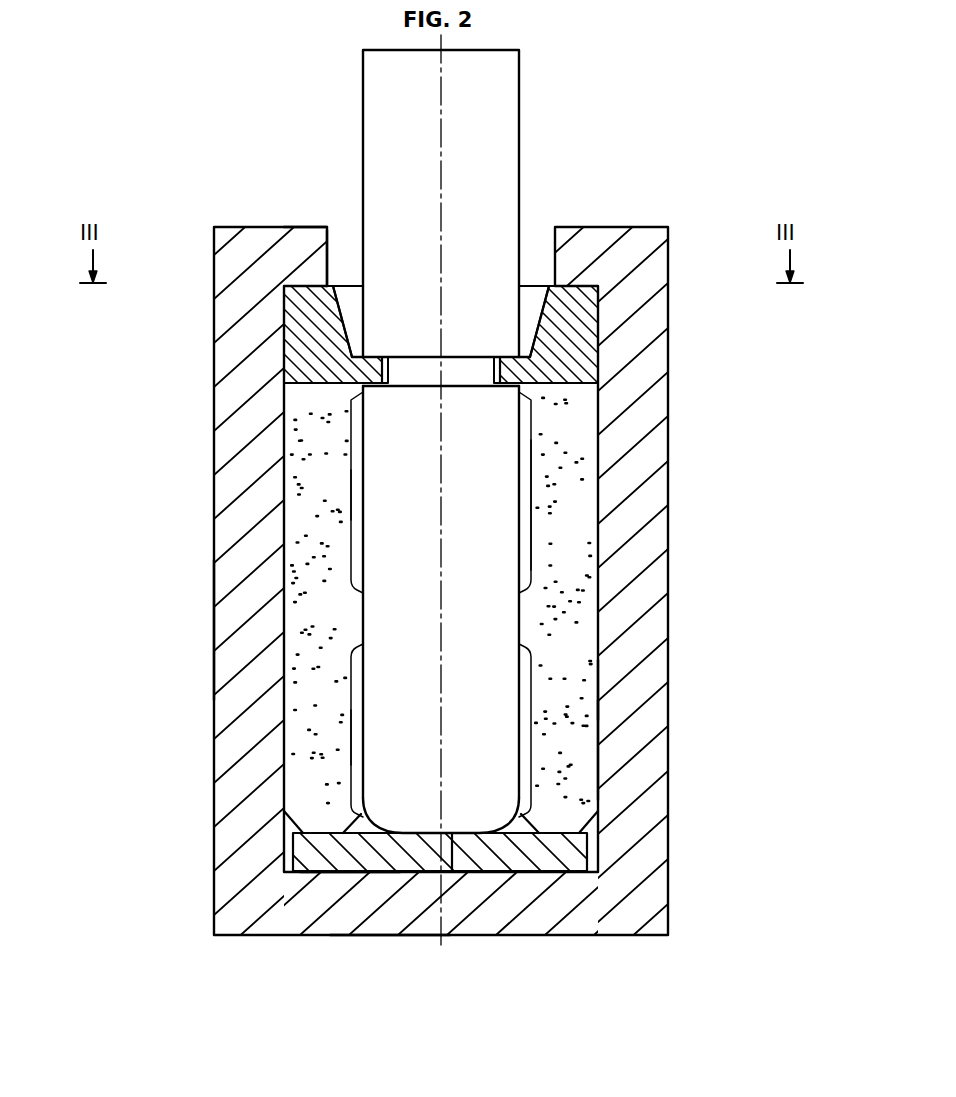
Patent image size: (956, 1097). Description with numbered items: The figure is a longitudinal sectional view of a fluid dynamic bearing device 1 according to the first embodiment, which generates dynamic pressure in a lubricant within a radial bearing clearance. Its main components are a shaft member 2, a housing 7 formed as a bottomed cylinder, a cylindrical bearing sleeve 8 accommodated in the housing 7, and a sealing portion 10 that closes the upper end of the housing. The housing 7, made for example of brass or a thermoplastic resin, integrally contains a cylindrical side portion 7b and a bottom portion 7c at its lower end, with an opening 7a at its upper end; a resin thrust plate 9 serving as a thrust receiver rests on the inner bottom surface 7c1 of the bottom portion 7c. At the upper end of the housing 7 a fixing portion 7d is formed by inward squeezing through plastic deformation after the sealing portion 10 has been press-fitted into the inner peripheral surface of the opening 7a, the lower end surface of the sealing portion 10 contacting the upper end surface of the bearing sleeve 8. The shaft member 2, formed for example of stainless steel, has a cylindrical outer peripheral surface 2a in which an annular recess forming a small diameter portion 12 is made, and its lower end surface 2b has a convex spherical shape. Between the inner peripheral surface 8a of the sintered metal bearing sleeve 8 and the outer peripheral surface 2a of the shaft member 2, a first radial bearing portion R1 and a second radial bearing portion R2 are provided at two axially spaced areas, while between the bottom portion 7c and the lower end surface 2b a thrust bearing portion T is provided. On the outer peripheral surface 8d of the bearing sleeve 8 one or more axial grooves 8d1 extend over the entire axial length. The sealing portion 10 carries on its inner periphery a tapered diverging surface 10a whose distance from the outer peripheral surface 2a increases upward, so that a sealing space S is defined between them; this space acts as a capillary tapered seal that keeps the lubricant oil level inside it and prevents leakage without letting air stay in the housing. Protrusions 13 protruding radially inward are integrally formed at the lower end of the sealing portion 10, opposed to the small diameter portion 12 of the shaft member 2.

The fluid dynamic bearing device 1 is at (704, 150).
The shaft member 2 is at (519, 105).
The outer peripheral surface 2a is at (522, 492).
The lower end surface 2b is at (511, 836).
The housing 7 is at (669, 437).
The opening 7a is at (342, 237).
The cylindrical side portion 7b is at (236, 625).
The bottom portion 7c is at (383, 915).
The housing bottom inner surface 7c1 is at (344, 866).
The fixing portion 7d is at (302, 237).
The bearing sleeve 8 is at (570, 633).
The inner peripheral surface 8a is at (508, 556).
The outer peripheral surface 8d is at (598, 750).
The axial groove 8d1 is at (592, 686).
The thrust plate 9 is at (560, 870).
The sealing portion 10 is at (580, 318).
The diverging surface 10a is at (340, 308).
The small diameter portion 12 is at (502, 362).
The protrusion 13 is at (381, 345).
The sealing space S is at (537, 300).
The thrust bearing portion T is at (452, 833).
The first radial bearing portion R1 is at (348, 497).
The second radial bearing portion R2 is at (348, 738).